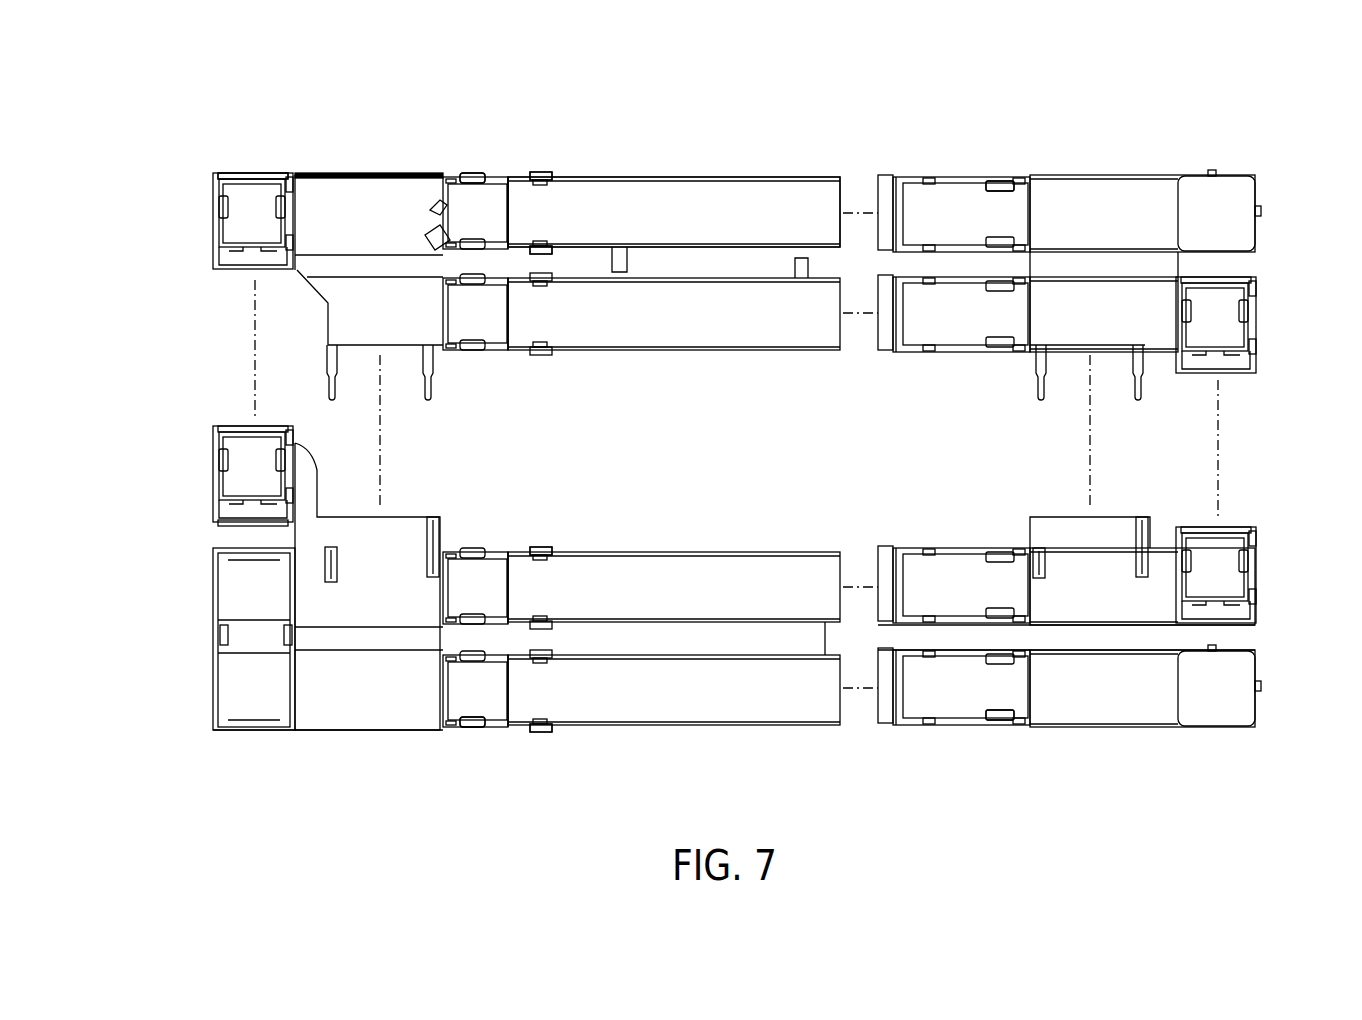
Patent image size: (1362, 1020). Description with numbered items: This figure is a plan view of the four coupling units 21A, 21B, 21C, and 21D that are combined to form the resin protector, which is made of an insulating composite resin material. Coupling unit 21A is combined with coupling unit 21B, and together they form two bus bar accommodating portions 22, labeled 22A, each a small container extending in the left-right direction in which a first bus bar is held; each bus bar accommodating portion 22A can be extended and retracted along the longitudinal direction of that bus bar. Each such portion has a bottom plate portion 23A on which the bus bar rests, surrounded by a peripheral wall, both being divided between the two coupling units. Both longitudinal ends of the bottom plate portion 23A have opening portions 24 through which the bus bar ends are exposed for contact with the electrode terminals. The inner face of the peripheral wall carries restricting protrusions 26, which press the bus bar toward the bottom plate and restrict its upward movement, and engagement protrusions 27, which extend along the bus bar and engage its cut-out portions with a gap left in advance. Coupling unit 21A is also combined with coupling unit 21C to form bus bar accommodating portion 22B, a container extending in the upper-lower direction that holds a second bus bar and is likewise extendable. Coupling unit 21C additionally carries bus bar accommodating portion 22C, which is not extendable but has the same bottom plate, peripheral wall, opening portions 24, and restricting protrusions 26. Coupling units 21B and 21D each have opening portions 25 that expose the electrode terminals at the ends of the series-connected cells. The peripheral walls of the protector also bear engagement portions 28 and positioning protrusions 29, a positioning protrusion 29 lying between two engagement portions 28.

The coupling unit 21A is at (414, 172).
The coupling unit 21B is at (1037, 175).
The coupling unit 21C is at (595, 550).
The coupling unit 21D is at (984, 548).
The bus bar accommodating portion 22 is at (734, 305).
The bus bar accommodating portion 22A is at (676, 182).
The bus bar accommodating portion 22B is at (215, 242).
The bus bar accommodating portion 22C is at (240, 710).
The bottom plate portion 23A is at (856, 198).
The opening portion 24 is at (270, 180).
The opening portion 25 is at (1248, 178).
The restricting protrusion 26 is at (548, 180).
The engagement protrusion 27 is at (236, 180).
The engagement portion 28 is at (253, 177).
The positioning protrusion 29 is at (367, 172).